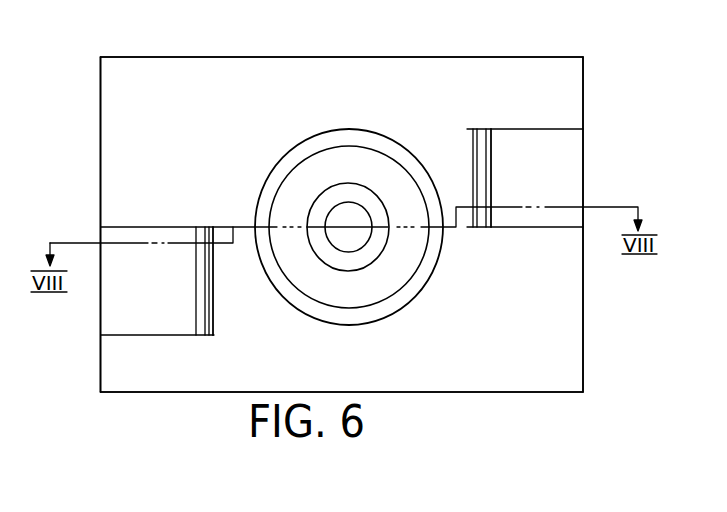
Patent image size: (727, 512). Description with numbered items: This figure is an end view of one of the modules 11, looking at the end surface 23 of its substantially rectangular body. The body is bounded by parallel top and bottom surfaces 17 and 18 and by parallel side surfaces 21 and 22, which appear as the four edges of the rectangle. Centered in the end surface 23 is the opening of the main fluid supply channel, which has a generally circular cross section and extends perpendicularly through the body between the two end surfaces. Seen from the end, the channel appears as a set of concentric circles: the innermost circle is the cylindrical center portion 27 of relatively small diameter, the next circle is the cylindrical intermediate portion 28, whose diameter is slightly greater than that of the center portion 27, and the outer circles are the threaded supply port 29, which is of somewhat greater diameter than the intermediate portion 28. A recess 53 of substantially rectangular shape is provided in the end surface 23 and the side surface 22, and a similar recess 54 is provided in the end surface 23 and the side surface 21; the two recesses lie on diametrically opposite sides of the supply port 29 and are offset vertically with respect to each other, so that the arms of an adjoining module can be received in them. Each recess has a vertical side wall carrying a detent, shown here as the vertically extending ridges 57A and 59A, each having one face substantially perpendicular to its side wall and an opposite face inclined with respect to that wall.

The module 11 is at (586, 333).
The top surface 17 is at (308, 56).
The bottom surface 18 is at (143, 394).
The side surface 21 is at (100, 143).
The side surface 22 is at (583, 88).
The end surface 23 is at (393, 356).
The center portion 27 is at (329, 217).
The intermediate portion 28 is at (377, 202).
The threaded supply port 29 is at (395, 312).
The recess 53 is at (568, 130).
The recess 54 is at (117, 334).
The detent 57A is at (484, 170).
The detent 59A is at (205, 296).